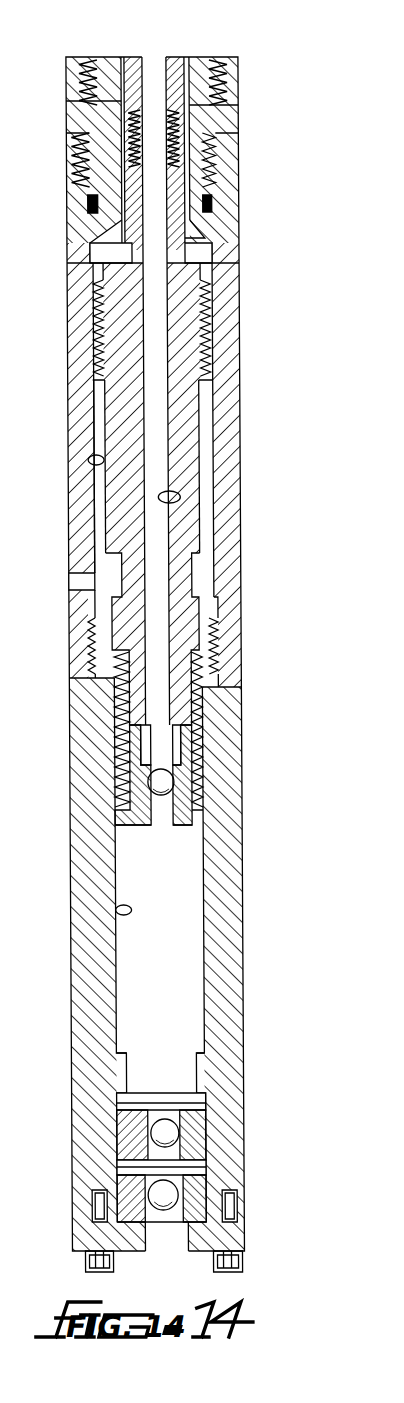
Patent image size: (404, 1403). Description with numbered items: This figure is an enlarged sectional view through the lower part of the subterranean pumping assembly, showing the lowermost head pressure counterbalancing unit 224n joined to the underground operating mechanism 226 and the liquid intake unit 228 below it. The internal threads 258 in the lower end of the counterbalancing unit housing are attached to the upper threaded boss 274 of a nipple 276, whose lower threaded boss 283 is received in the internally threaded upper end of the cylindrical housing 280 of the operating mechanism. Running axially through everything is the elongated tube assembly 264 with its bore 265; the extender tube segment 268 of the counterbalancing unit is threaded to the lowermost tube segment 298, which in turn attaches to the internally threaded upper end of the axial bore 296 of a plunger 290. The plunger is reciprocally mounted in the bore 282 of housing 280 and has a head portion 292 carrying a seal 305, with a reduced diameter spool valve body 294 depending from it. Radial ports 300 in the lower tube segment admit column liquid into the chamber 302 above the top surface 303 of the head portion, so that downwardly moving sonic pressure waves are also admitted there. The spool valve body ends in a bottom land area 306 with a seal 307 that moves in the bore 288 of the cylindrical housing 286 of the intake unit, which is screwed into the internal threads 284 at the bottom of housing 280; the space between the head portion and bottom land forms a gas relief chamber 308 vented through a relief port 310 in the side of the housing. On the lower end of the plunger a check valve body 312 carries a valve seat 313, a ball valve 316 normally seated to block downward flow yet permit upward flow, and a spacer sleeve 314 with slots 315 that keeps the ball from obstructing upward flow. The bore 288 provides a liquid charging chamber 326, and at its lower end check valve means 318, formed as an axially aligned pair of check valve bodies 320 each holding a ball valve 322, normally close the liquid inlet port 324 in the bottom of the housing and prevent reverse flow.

The lowermost head pressure counterbalancing unit 224n is at (246, 80).
The internal threads 258 is at (100, 95).
The extender tube segment 268 is at (137, 72).
The bore 265 is at (158, 62).
The elongated tube assembly 264 is at (122, 90).
The upper threaded boss 274 is at (200, 90).
The nipple 276 is at (62, 117).
The lowermost tube segment 298 is at (190, 183).
The lower threaded boss 283 is at (105, 170).
The cylindrical housing 280 is at (85, 226).
The radial ports 300 is at (178, 240).
The top surface 303 is at (187, 260).
The chamber 302 is at (95, 268).
The underground operating mechanism 226 is at (250, 336).
The seal 305 is at (207, 352).
The head portion 292 is at (95, 392).
The plunger 290 is at (205, 425).
The bore 282 is at (92, 462).
The axial bore 296 is at (175, 495).
The chamber 308 is at (100, 500).
The spool valve body 294 is at (185, 528).
The relief port 310 is at (82, 582).
The bottom land area 306 is at (183, 612).
The internal threads 284 is at (92, 640).
The seal 307 is at (203, 690).
The cylindrical housing 286 is at (88, 845).
The liquid intake unit 228 is at (250, 888).
The spacer sleeve 314 is at (135, 738).
The ball valve 316 is at (177, 760).
The slots 315 is at (140, 770).
The check valve body 312 is at (190, 798).
The valve seat 313 is at (147, 778).
The bore 288 is at (112, 910).
The liquid charging chamber 326 is at (134, 958).
The check valve means 318 is at (207, 1147).
The check valve bodies 320 is at (137, 1123).
The ball valve 322 is at (130, 1113).
The liquid inlet port 324 is at (171, 1240).